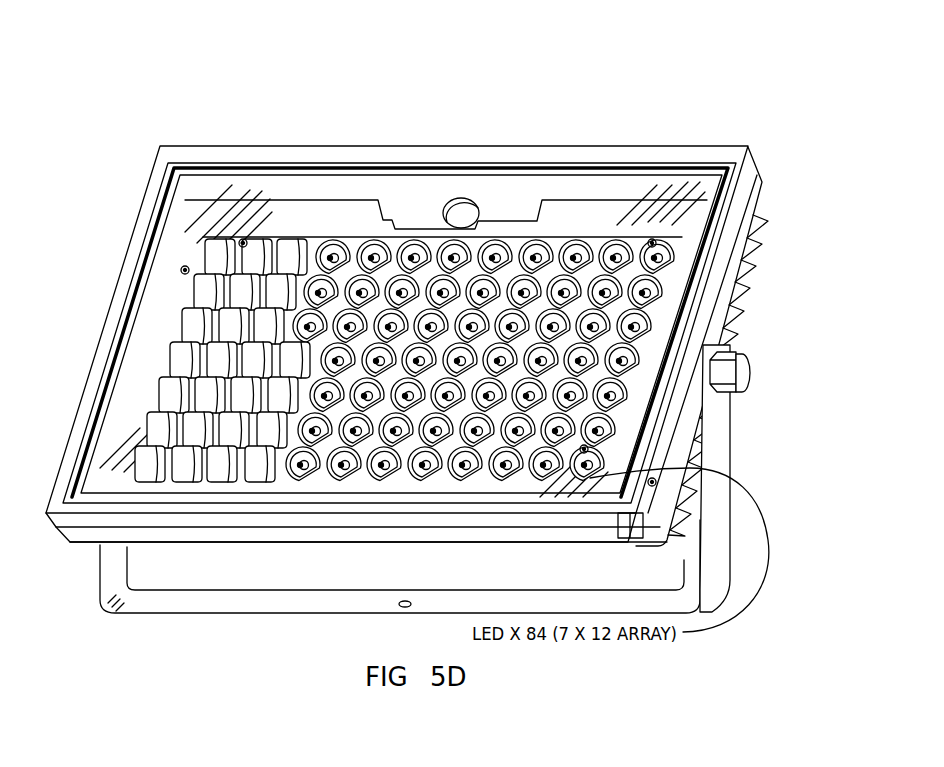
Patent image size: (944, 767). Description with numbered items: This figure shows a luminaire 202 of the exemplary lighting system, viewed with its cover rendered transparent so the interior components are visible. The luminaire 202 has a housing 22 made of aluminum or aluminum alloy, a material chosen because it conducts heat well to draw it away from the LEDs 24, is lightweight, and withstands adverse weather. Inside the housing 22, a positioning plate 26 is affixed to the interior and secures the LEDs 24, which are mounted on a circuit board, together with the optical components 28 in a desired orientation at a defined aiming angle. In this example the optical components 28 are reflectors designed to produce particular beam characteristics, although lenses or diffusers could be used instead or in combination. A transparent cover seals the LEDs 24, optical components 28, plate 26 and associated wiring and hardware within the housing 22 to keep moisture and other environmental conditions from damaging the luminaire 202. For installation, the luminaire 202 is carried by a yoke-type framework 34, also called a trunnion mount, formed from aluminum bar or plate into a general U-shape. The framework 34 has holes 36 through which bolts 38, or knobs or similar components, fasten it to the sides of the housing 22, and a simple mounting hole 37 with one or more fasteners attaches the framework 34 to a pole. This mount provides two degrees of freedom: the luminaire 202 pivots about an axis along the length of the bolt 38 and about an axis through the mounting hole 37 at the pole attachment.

The luminaire 202 is at (445, 332).
The housing 22 is at (760, 186).
The LEDs 24 is at (658, 257).
The positioning plate 26 is at (577, 243).
The optical components 28 is at (615, 434).
The yoke-type framework 34 is at (715, 457).
The holes 36 is at (716, 344).
The mounting hole 37 is at (405, 600).
The bolts 38 is at (750, 373).